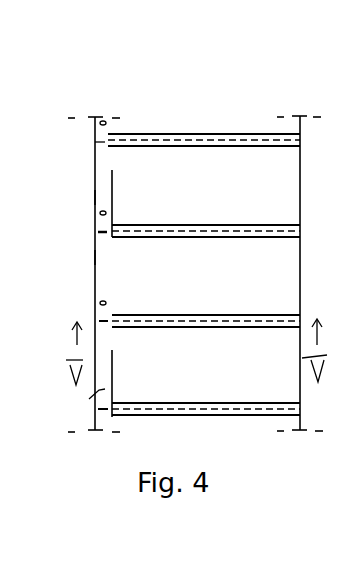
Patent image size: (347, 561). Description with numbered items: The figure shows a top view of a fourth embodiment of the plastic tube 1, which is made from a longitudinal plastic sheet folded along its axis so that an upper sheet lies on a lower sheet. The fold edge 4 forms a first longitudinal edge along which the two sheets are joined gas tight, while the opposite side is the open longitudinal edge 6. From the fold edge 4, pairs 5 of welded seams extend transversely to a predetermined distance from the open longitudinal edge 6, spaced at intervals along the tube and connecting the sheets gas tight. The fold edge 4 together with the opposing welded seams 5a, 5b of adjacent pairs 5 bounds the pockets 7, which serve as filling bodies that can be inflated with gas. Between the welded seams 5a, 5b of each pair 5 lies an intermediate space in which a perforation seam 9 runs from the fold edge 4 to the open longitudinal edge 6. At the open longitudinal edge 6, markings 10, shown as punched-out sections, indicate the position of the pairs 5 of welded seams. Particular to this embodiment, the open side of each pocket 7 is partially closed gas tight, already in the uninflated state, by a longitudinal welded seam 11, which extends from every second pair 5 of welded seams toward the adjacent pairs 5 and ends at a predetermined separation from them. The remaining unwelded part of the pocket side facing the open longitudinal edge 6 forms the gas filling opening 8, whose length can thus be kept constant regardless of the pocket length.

The plastic tube 1 is at (144, 108).
The fold edge 4 is at (302, 195).
The pair of welded seams 5 is at (223, 146).
The welded seam 5a is at (143, 147).
The welded seam 5b is at (148, 237).
The open longitudinal edge 6 is at (94, 188).
The pocket 7 is at (226, 373).
The gas filling opening 8 is at (97, 257).
The perforation seam 9 is at (283, 318).
The marking 10 is at (75, 404).
The longitudinal welded seam 11 is at (110, 198).